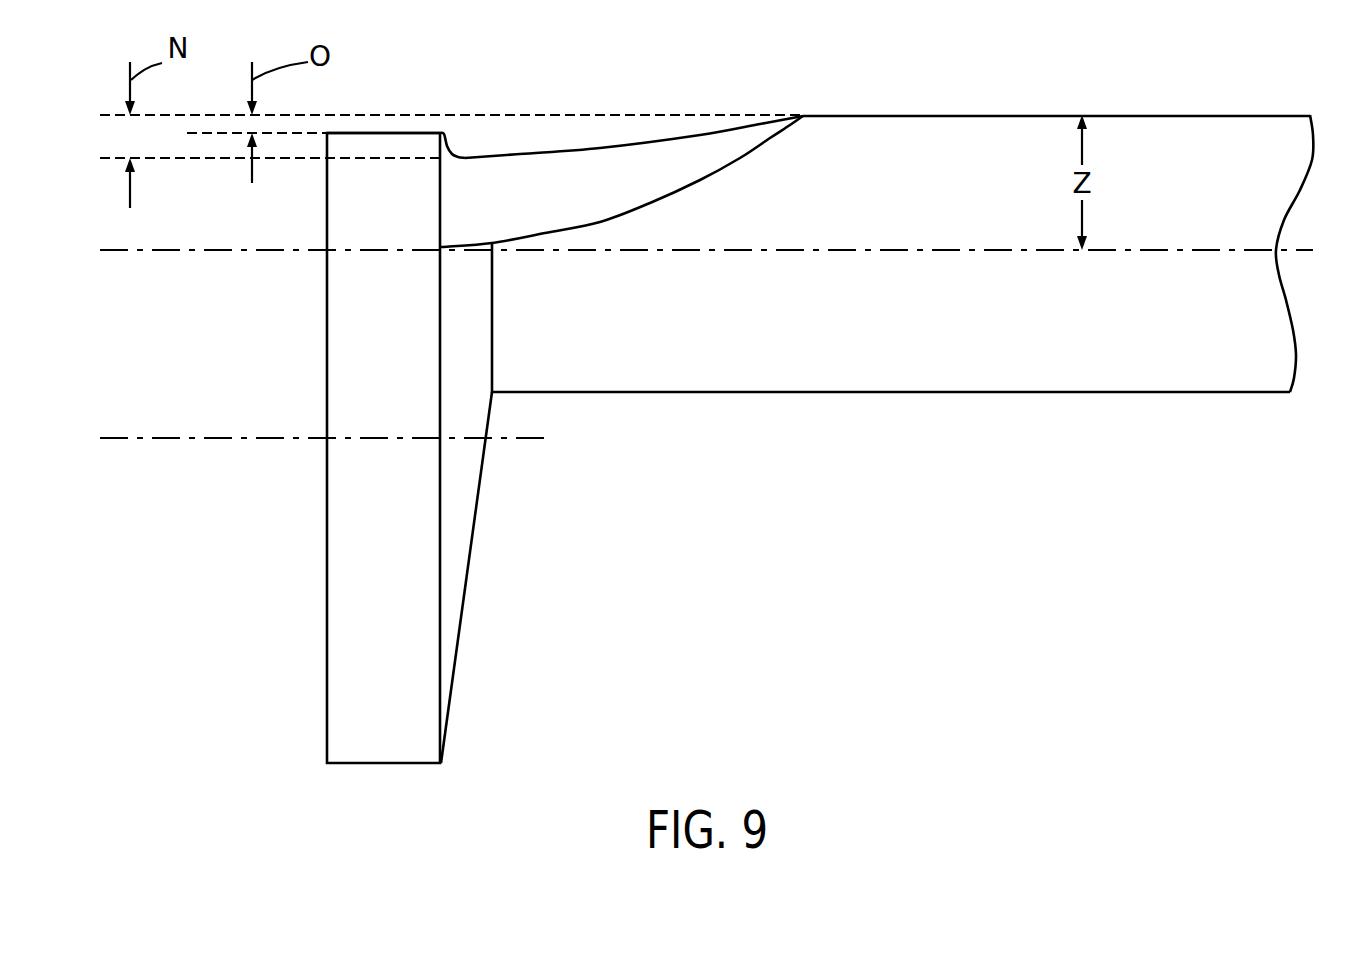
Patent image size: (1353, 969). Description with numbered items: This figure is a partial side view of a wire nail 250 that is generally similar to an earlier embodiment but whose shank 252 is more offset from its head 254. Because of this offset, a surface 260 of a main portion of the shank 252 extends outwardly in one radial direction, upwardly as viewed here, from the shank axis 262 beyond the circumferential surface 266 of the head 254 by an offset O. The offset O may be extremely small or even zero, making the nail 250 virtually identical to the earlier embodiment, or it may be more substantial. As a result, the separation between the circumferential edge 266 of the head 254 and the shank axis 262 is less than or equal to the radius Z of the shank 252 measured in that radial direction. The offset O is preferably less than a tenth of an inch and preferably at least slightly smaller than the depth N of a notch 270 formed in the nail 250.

The nail 250 is at (767, 399).
The shank 252 is at (948, 362).
The head 254 is at (370, 558).
The surface of a main portion of the shank 260 is at (948, 114).
The shank axis 262 is at (238, 253).
The circumferential surface of the head 266 is at (403, 132).
The notch 270 is at (533, 130).